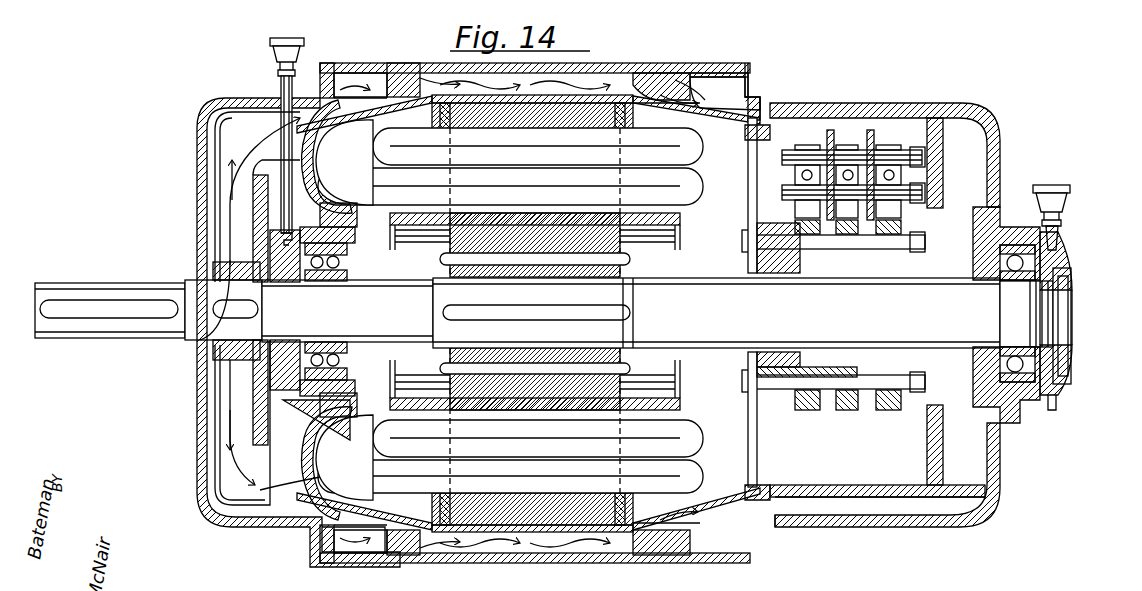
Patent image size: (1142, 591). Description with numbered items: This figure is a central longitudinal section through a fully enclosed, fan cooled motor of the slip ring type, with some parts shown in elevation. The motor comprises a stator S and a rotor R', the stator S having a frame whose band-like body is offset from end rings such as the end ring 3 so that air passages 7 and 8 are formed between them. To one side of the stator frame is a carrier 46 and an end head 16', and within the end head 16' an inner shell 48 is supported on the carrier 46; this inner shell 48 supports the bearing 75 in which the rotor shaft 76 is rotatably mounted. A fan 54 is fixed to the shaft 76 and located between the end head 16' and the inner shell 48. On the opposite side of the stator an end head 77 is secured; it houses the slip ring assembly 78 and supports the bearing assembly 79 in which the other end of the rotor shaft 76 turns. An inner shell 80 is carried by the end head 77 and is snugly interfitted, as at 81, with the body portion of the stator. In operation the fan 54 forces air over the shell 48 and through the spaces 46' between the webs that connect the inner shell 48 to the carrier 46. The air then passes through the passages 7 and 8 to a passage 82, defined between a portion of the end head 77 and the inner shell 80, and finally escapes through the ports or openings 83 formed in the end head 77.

The air passage 7 is at (418, 63).
The carrier 46 is at (353, 294).
The spaces 46' is at (357, 313).
The stator S is at (664, 66).
The air passage 8 is at (576, 284).
The interfit 81 is at (640, 131).
The passage 82 is at (710, 298).
The ports or openings 83 is at (758, 85).
The rotor R' is at (535, 311).
The rotor shaft 76 is at (758, 308).
The bearing 75 is at (335, 283).
The end head 16' is at (275, 302).
The fan 54 is at (222, 217).
The inner shell 48 is at (312, 157).
The end head 77 is at (828, 103).
The slip ring assembly 78 is at (903, 268).
The inner shell 80 is at (755, 462).
The bearing assembly 79 is at (1060, 241).
The end ring or flange 3 is at (656, 586).